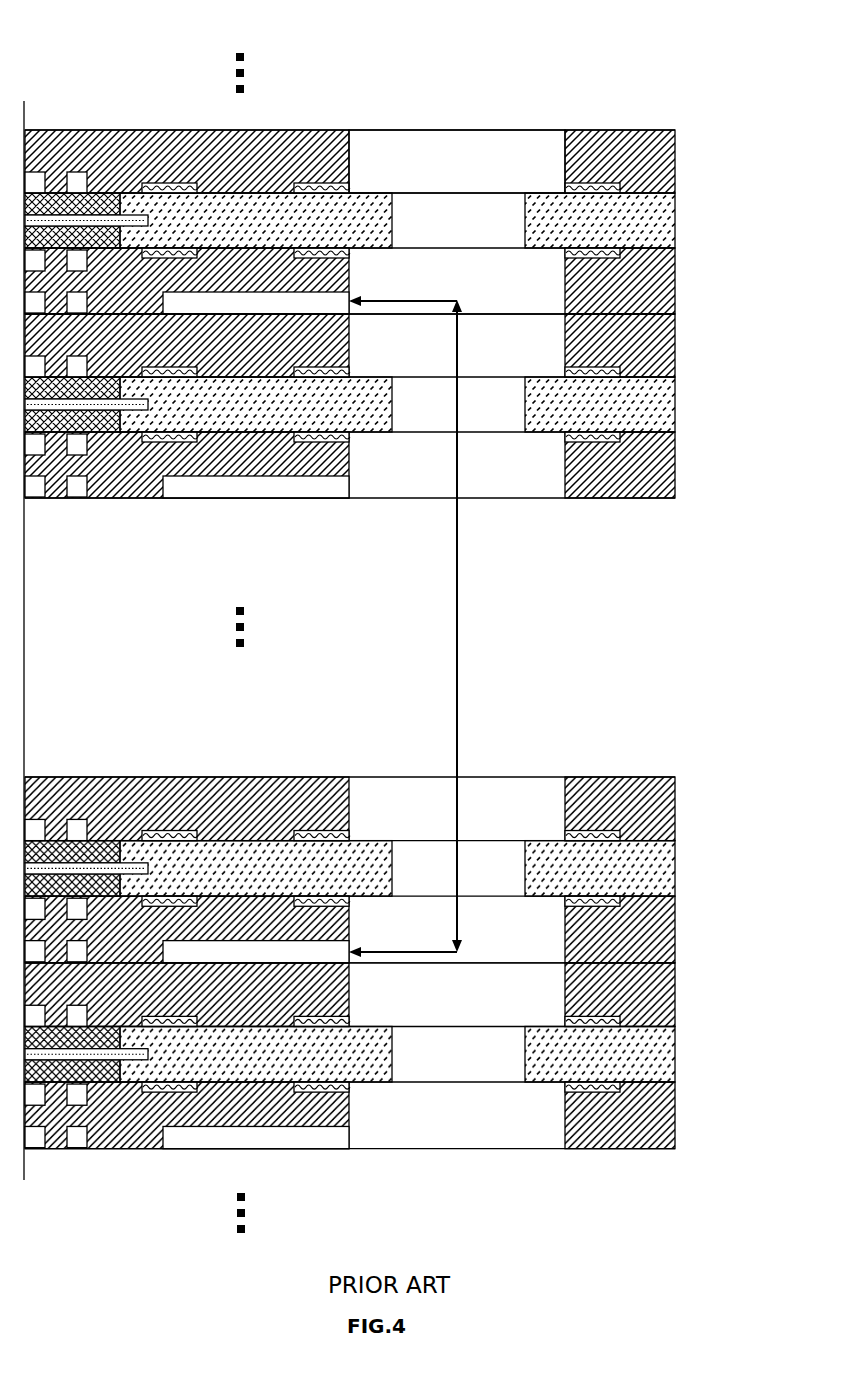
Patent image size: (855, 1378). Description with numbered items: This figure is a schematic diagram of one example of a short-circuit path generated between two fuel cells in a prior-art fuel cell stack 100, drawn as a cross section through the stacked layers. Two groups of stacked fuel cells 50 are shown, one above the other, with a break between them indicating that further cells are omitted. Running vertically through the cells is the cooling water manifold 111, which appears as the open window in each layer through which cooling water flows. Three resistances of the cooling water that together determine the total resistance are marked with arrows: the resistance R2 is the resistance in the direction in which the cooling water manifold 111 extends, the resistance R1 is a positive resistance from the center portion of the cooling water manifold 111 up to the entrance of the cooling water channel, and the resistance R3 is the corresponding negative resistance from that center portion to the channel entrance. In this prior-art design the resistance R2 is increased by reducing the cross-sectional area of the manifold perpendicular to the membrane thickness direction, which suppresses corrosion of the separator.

The fuel cell stack 100 is at (69, 22).
The fuel cell 50 is at (686, 346).
The cooling water manifold 111 is at (461, 120).
The resistance R1 is at (396, 294).
The resistance R2 is at (458, 617).
The resistance R3 is at (408, 954).